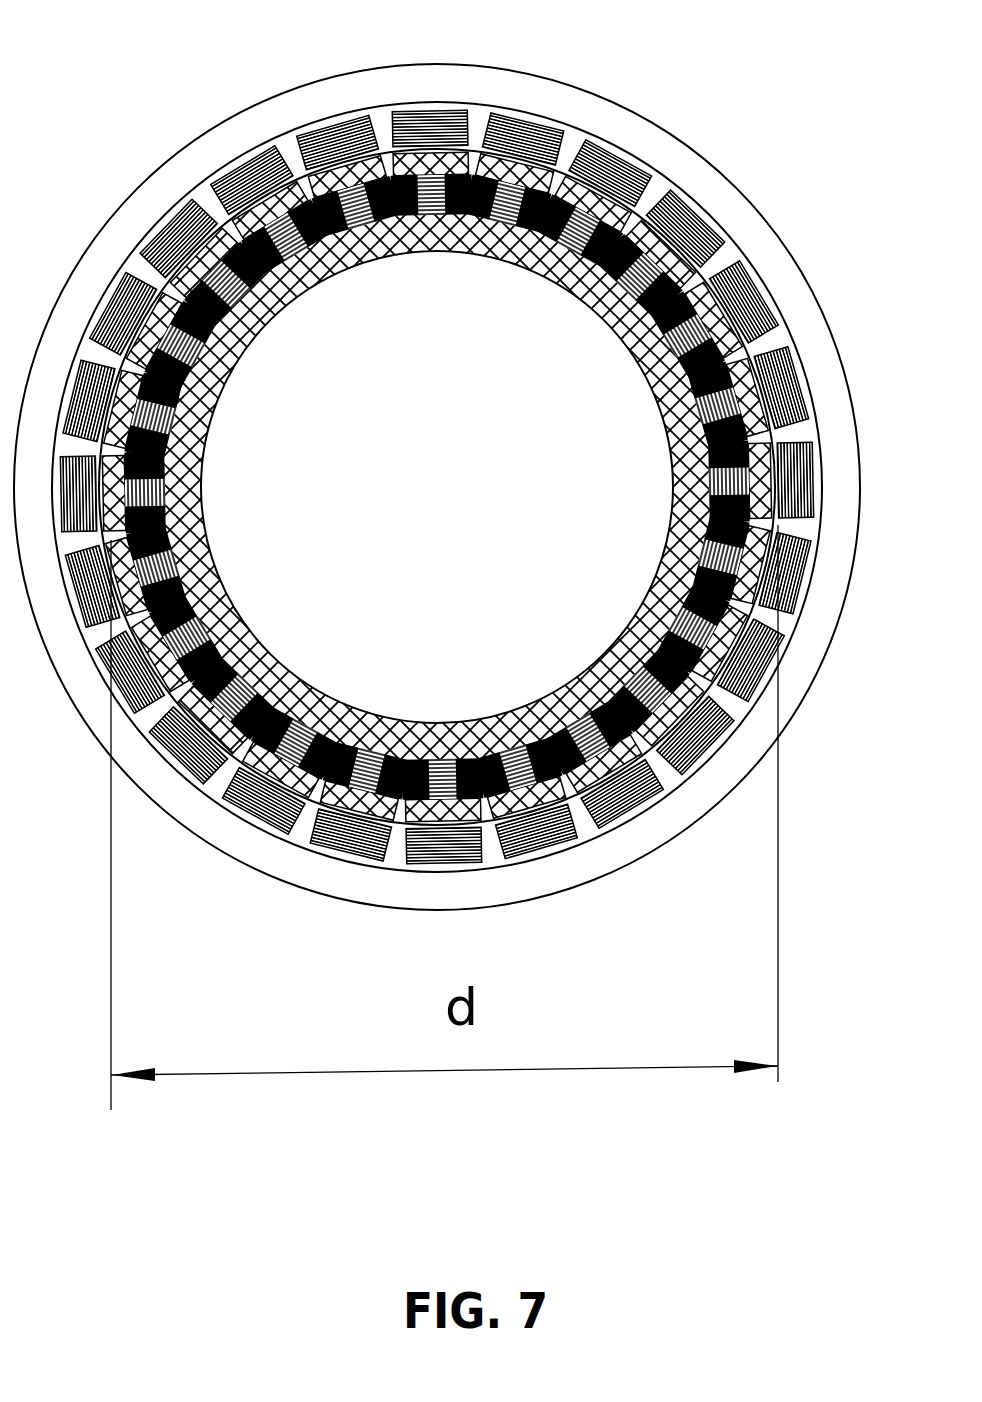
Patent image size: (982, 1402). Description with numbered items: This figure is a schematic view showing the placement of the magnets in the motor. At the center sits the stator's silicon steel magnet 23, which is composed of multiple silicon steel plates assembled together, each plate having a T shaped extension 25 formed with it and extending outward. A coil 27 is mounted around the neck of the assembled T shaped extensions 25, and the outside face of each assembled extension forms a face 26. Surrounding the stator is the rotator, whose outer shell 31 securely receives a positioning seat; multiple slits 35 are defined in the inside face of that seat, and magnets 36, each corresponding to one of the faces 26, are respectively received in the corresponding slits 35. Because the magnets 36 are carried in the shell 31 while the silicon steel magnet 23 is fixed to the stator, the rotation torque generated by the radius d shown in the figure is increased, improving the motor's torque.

The shell 31 is at (538, 97).
The face 26 is at (713, 230).
The silicon steel magnet 23 is at (655, 375).
The T shaped extension 25 is at (653, 607).
The coil 27 is at (705, 467).
The slit 35 is at (340, 121).
The magnet 36 is at (248, 162).